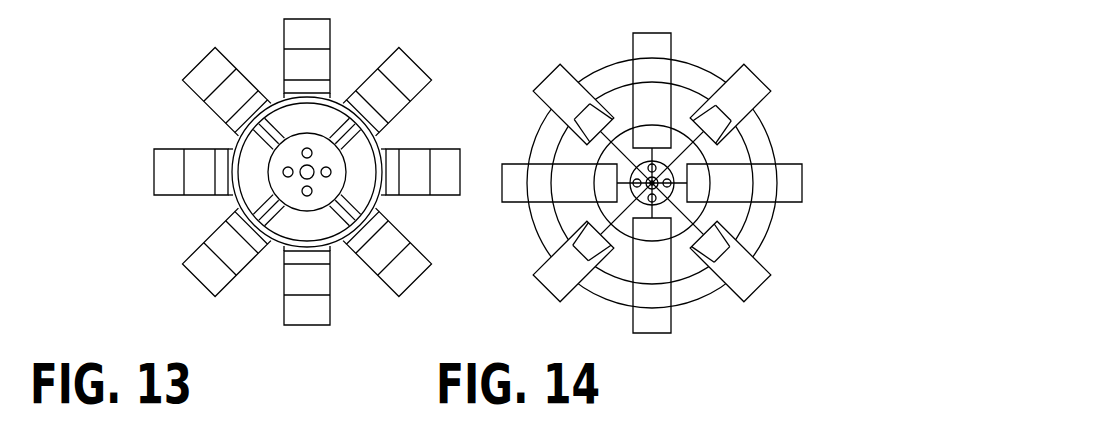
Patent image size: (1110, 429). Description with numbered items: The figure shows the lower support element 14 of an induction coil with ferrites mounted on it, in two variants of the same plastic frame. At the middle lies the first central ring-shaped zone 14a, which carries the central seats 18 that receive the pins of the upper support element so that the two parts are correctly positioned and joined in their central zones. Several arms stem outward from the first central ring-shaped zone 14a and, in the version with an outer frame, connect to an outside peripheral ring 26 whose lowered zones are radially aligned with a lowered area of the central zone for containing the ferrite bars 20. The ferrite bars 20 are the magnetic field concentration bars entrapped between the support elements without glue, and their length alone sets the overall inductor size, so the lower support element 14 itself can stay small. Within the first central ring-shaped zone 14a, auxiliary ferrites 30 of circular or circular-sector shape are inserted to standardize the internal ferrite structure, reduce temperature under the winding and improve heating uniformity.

In FIG. 13, the lower support element 14 is at (153, 112).
In FIG. 14, the lower support element 14 is at (776, 65).
In FIG. 13, the first central ring-shaped zone 14a is at (284, 183).
In FIG. 14, the first central ring-shaped zone 14a is at (695, 157).
In FIG. 13, the central seats 18 is at (307, 148).
In FIG. 14, the central seats 18 is at (663, 178).
In FIG. 13, the ferrite bars 20 is at (411, 267).
In FIG. 14, the ferrite bars 20 is at (788, 183).
In FIG. 14, the outside peripheral ring 26 is at (755, 232).
In FIG. 13, the auxiliary ferrites 30 is at (360, 157).